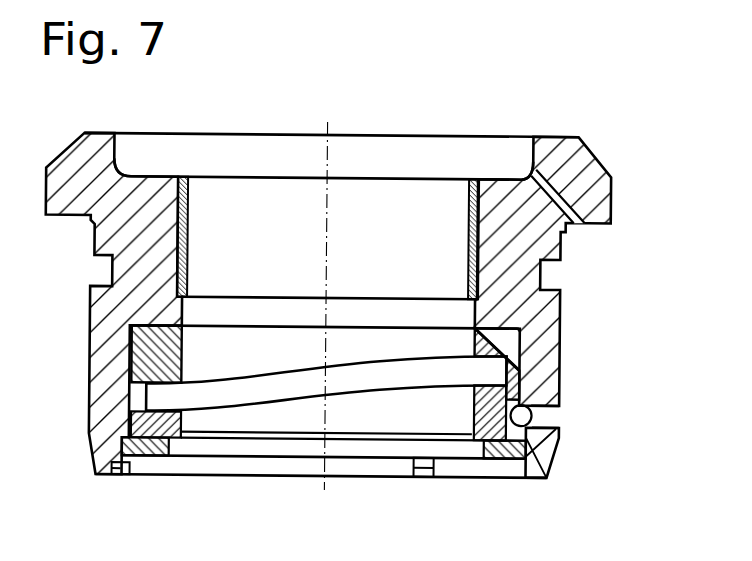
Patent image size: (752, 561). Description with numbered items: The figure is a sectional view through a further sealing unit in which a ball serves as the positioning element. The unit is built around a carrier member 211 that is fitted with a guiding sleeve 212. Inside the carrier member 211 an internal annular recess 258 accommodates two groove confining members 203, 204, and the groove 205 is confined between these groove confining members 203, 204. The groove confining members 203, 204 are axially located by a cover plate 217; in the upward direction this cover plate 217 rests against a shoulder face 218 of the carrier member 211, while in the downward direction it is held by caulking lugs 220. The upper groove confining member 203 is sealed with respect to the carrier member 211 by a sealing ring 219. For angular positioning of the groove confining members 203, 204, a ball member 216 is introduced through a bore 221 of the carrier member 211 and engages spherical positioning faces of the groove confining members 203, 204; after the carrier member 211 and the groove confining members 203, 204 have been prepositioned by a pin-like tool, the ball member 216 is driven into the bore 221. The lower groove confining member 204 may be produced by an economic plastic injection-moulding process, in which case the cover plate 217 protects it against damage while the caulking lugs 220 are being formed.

The upper groove confining member 203 is at (519, 376).
The groove confining member 204 is at (470, 434).
The groove 205 is at (250, 396).
The carrier member 211 is at (582, 178).
The guiding sleeve 212 is at (467, 196).
The ball member 216 is at (553, 436).
The cover plate 217 is at (502, 477).
The shoulder face 218 is at (124, 420).
The sealing ring 219 is at (130, 328).
The caulking lugs 220 is at (122, 480).
The bore 221 is at (547, 415).
The internal annular recess 258 is at (122, 382).